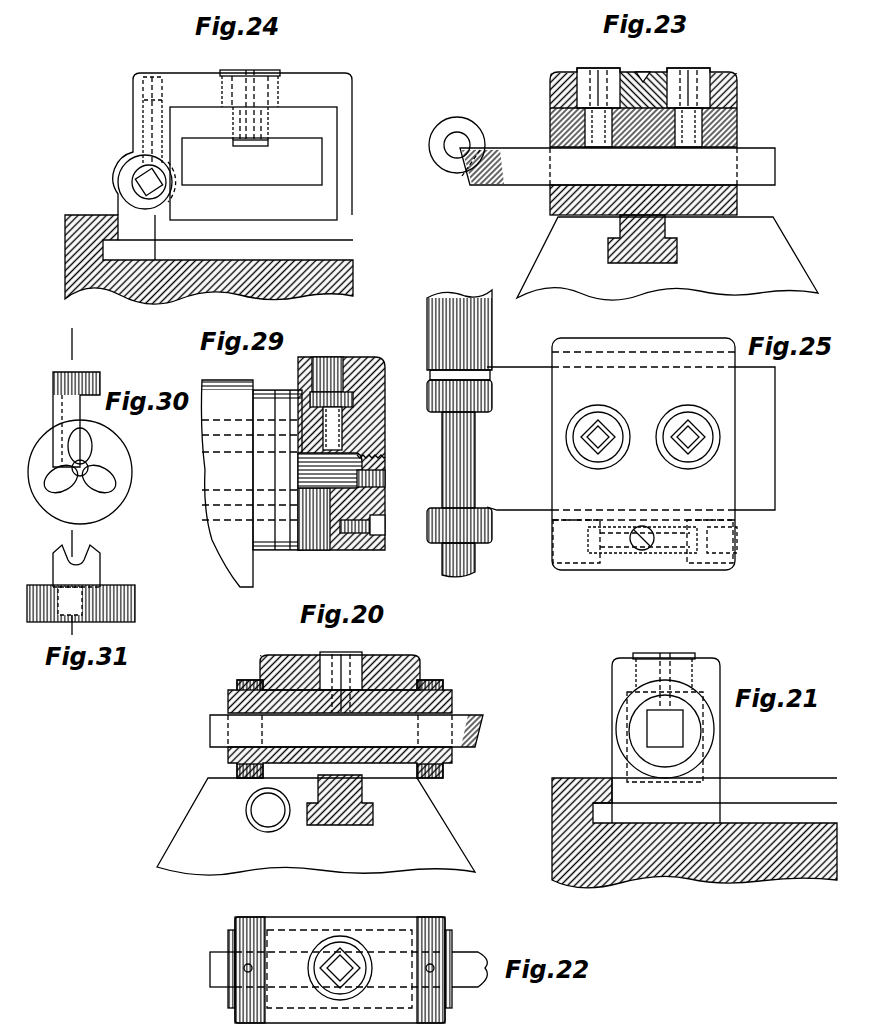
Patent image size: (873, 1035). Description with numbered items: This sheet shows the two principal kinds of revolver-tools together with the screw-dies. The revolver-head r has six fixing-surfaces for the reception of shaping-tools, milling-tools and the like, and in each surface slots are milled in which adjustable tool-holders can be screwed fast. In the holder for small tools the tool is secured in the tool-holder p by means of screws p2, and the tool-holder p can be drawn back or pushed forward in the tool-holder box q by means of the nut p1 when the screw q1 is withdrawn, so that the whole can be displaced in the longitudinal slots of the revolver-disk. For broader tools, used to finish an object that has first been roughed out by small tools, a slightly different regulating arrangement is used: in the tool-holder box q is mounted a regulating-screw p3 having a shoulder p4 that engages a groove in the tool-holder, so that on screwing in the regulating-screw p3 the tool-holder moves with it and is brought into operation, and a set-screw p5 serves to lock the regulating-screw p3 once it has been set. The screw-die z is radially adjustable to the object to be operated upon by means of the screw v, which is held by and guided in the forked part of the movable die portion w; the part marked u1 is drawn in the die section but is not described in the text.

In FIG. 24, the tool-holder box q is at (118, 196).
In FIG. 23, the tool-holder box q is at (608, 250).
In FIG. 25, the tool-holder box q is at (643, 454).
In FIG. 20, the tool-holder box q is at (418, 668).
In FIG. 21, the tool-holder box q is at (720, 762).
In FIG. 24, the screw q1 is at (282, 98).
In FIG. 23, the screw q1 is at (588, 75).
In FIG. 20, the screw q1 is at (322, 660).
In FIG. 21, the screw q1 is at (683, 656).
In FIG. 23, the tool-holder p is at (652, 200).
In FIG. 25, the tool-holder p is at (705, 365).
In FIG. 20, the tool-holder p is at (345, 758).
In FIG. 25, the nut p1 is at (576, 541).
In FIG. 20, the nut p1 is at (443, 684).
In FIG. 24, the screws p2 is at (270, 132).
In FIG. 20, the screws p2 is at (328, 740).
In FIG. 25, the regulating-screw p3 is at (737, 535).
In FIG. 25, the shoulder p4 is at (700, 526).
In FIG. 24, the set-screw p5 is at (141, 106).
In FIG. 23, the revolver-head r is at (667, 258).
In FIG. 20, the revolver-head r is at (316, 826).
In FIG. 21, the revolver-head r is at (745, 872).
In FIG. 29, the shaft u1 is at (300, 468).
In FIG. 29, the screw v is at (335, 376).
In FIG. 29, the movable die portion w is at (378, 440).
In FIG. 30, the movable die portion w is at (76, 419).
In FIG. 31, the movable die portion w is at (65, 566).
In FIG. 29, the screw-die z is at (352, 453).
In FIG. 30, the screw-die z is at (91, 472).
In FIG. 31, the screw-die z is at (81, 603).